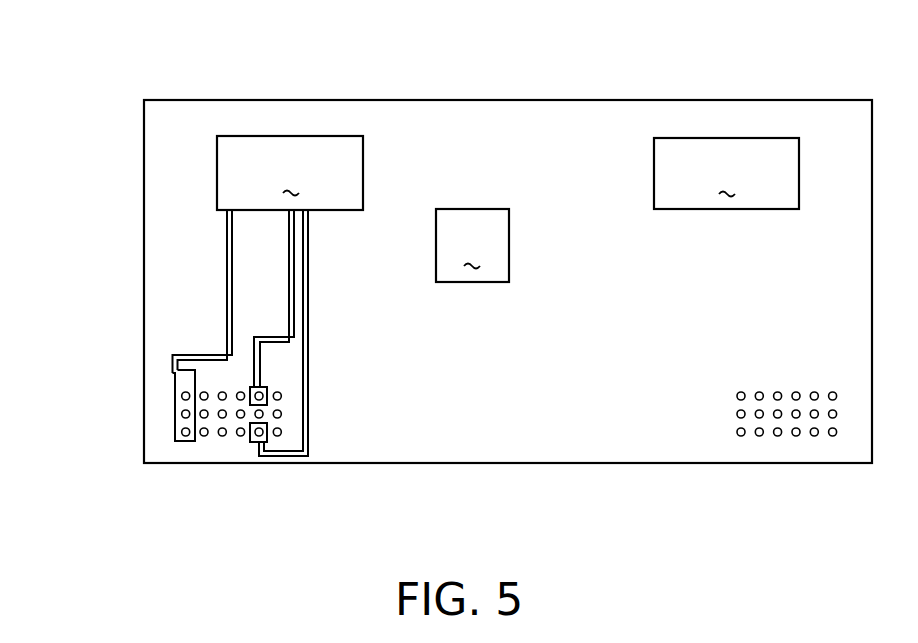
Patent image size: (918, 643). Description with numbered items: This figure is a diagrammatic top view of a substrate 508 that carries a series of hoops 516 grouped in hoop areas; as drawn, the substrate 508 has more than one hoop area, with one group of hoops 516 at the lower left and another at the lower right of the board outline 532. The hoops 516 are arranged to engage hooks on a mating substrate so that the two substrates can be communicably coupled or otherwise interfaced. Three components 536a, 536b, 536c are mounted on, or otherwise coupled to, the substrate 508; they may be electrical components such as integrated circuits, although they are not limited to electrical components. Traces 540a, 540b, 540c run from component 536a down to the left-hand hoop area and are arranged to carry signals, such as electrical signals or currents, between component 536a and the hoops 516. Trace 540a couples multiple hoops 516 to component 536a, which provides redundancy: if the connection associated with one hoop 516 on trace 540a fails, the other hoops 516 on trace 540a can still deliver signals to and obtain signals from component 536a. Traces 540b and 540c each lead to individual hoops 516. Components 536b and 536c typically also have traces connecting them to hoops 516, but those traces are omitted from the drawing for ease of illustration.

The substrate 508 is at (110, 42).
The printed circuit board 532 is at (800, 100).
The component 536a is at (290, 173).
The component 536b is at (472, 245).
The component 536c is at (726, 173).
The trace 540a is at (172, 362).
The trace 540b is at (253, 352).
The trace 540c is at (290, 456).
The hoops 516 is at (183, 411).